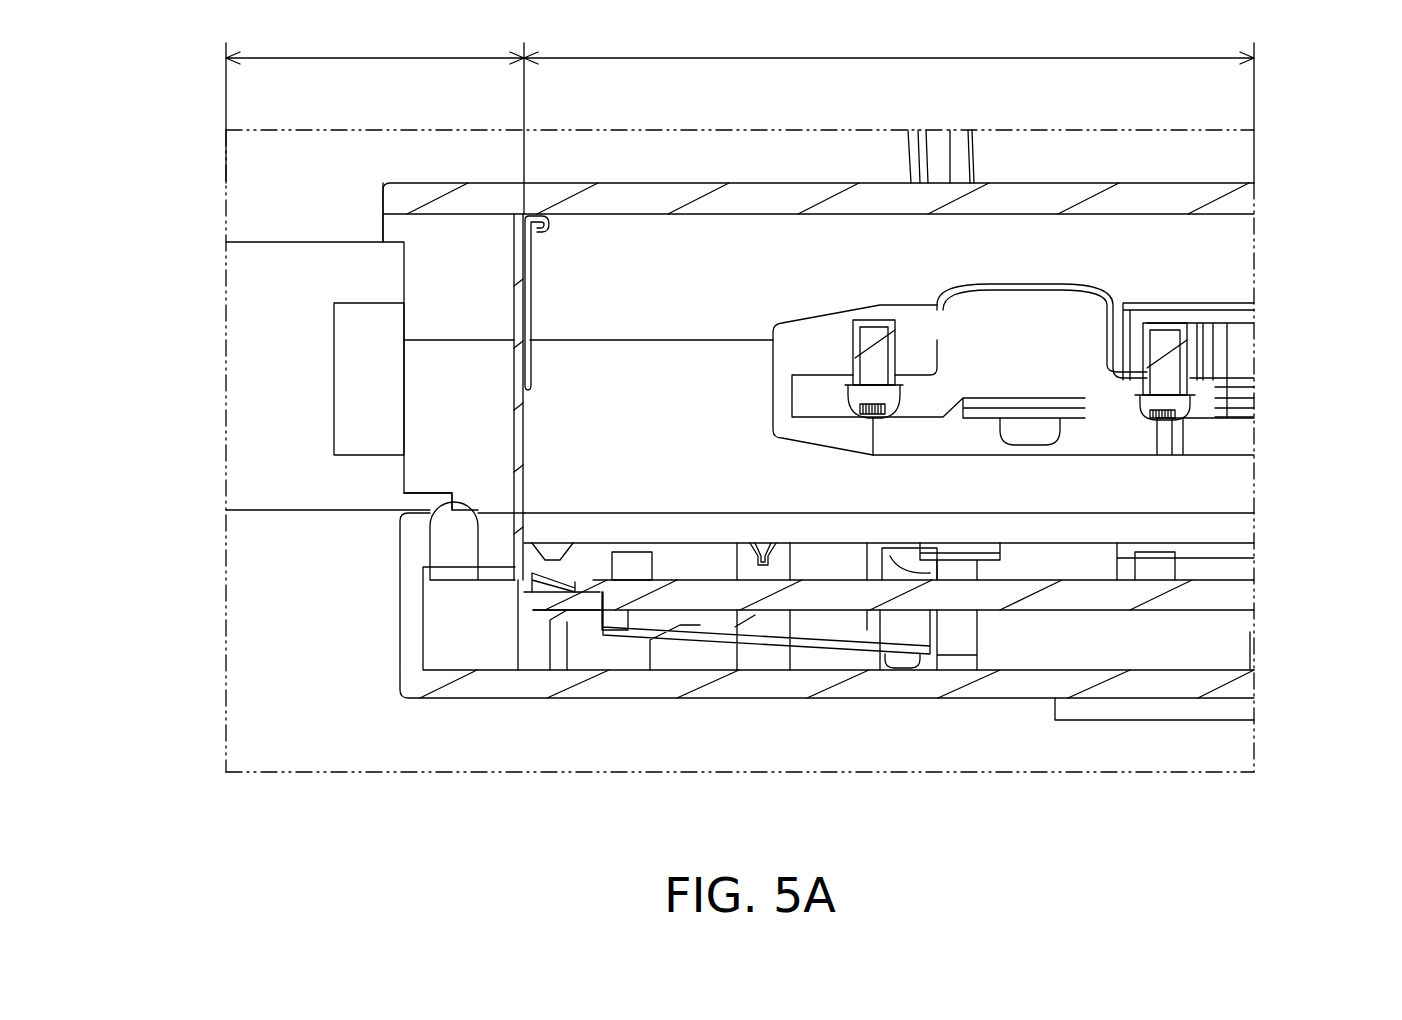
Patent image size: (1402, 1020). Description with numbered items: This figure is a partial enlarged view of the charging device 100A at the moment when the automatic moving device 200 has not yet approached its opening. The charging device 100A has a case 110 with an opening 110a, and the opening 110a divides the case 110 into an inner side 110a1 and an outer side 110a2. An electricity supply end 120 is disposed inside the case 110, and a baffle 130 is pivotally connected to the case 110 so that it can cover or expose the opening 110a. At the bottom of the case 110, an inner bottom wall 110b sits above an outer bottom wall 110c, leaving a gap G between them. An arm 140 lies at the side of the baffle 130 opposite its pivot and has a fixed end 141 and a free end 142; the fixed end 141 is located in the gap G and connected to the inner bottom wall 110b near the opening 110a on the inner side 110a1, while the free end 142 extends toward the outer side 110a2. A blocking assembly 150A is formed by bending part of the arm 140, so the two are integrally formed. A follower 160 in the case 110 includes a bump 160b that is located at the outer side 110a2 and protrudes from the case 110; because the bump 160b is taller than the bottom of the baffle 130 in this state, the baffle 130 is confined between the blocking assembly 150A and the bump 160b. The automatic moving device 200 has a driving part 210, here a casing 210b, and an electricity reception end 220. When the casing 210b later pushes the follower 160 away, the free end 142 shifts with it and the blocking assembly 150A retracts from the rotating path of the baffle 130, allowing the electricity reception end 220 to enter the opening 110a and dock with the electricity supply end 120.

The charging device 100A is at (1312, 130).
The case 110 is at (1055, 195).
The opening 110a is at (508, 570).
The inner side 110a1 is at (889, 47).
The outer side 110a2 is at (375, 47).
The inner bottom wall 110b is at (1240, 598).
The outer bottom wall 110c is at (1240, 685).
The gap G is at (1242, 638).
The electricity supply end 120 is at (908, 327).
The baffle 130 is at (516, 370).
The arm 140 is at (750, 638).
The fixed end 141 is at (905, 652).
The free end 142 is at (487, 590).
The blocking assembly 150A is at (553, 578).
The follower 160 is at (293, 541).
The bump 160b is at (436, 549).
The automatic moving device 200 is at (297, 348).
The driving part 210 is at (297, 489).
The casing 210b is at (370, 496).
The electricity reception end 220 is at (357, 413).